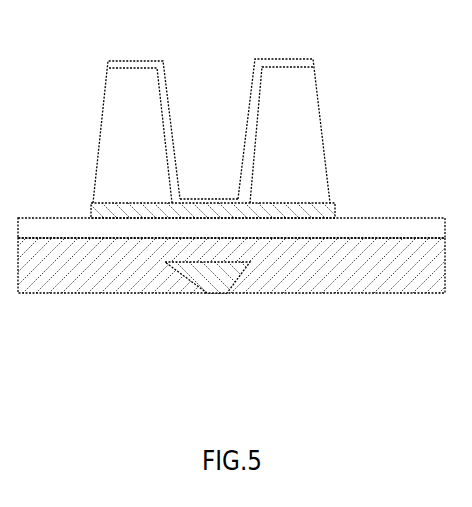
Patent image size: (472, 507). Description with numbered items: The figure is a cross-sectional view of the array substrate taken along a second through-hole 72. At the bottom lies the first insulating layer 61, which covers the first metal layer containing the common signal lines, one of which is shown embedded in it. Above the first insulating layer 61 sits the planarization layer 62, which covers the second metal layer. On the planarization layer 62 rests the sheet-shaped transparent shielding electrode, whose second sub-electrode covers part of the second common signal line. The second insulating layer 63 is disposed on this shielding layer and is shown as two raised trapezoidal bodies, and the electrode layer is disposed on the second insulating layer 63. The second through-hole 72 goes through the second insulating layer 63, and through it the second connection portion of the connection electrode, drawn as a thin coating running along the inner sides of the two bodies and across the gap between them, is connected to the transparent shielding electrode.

The first insulating layer 61 is at (353, 277).
The planarization layer 62 is at (76, 228).
The second insulating layer 63 is at (113, 135).
The second through-hole 72 is at (161, 121).